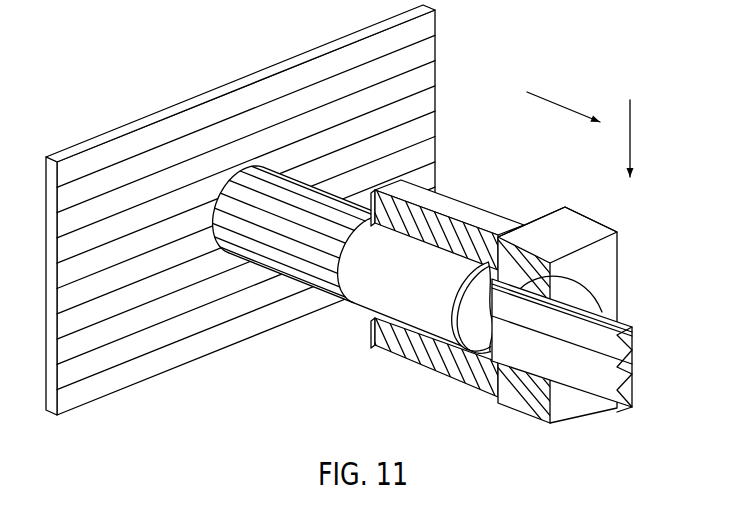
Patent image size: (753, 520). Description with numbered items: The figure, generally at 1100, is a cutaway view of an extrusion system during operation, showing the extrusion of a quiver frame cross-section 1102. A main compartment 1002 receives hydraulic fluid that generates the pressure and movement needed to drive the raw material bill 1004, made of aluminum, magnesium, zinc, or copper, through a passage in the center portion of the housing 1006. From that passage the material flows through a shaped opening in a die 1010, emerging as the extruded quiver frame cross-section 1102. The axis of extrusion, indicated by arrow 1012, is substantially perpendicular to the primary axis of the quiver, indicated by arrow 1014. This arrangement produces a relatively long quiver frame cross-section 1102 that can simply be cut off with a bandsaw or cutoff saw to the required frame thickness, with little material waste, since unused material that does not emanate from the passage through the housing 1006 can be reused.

The main compartment 1002 is at (145, 382).
The raw material bill 1004 is at (358, 308).
The housing 1006 is at (470, 215).
The die 1010 is at (458, 305).
The arrow indicating axis of extrusion 1012 is at (560, 102).
The arrow indicating primary axis of the quiver 1014 is at (632, 132).
The cutaway view of the extrusion system 1100 is at (470, 87).
The quiver frame cross-section 1102 is at (608, 410).